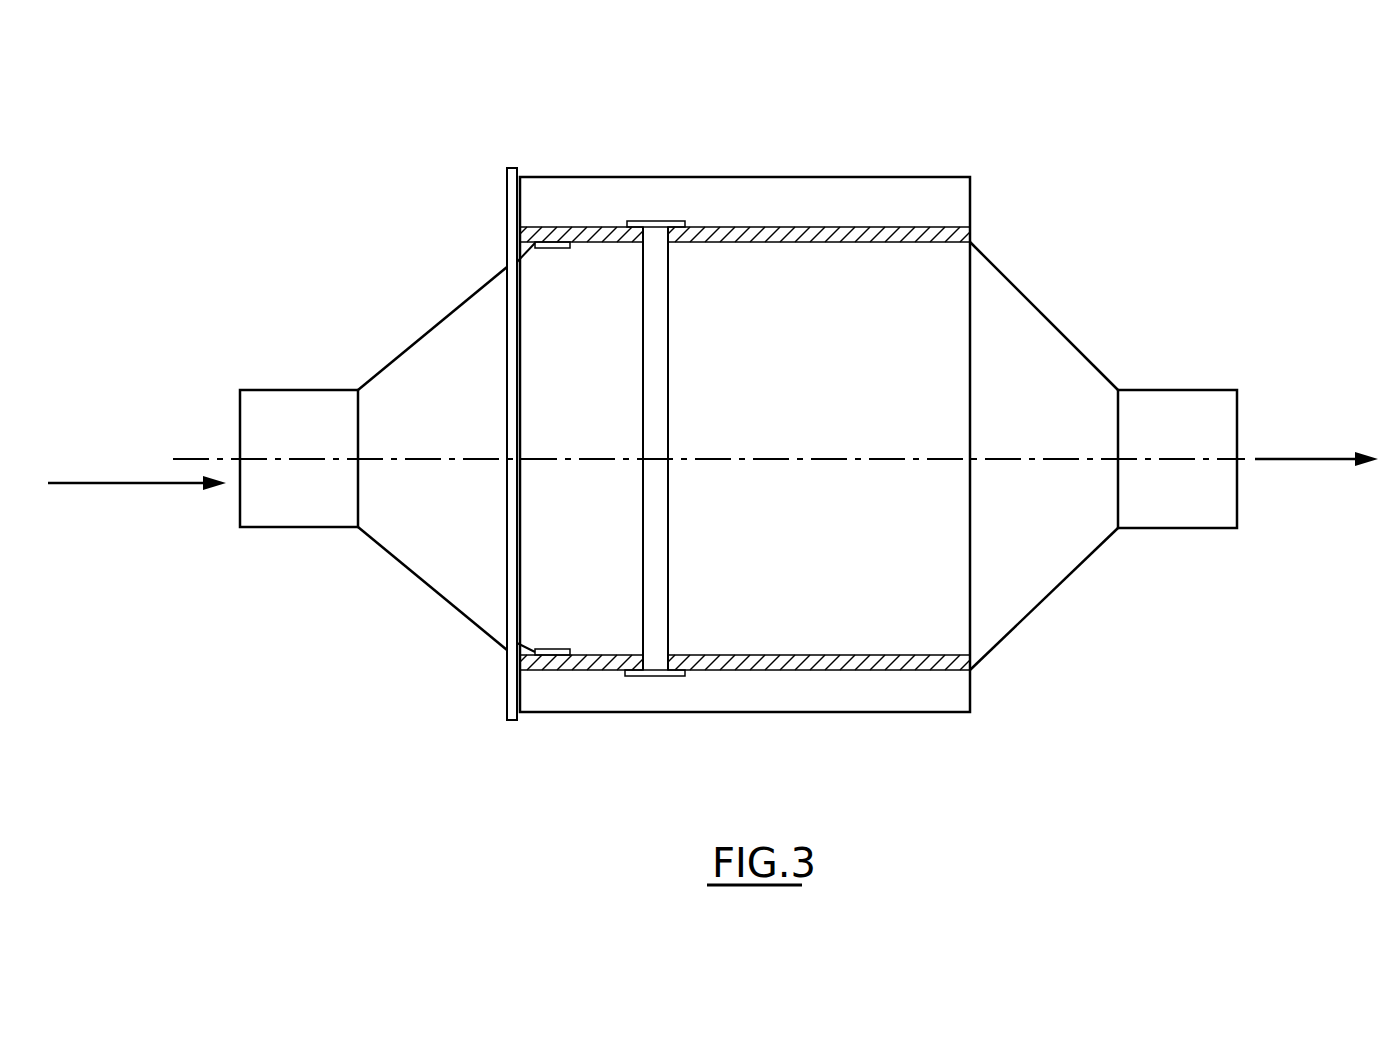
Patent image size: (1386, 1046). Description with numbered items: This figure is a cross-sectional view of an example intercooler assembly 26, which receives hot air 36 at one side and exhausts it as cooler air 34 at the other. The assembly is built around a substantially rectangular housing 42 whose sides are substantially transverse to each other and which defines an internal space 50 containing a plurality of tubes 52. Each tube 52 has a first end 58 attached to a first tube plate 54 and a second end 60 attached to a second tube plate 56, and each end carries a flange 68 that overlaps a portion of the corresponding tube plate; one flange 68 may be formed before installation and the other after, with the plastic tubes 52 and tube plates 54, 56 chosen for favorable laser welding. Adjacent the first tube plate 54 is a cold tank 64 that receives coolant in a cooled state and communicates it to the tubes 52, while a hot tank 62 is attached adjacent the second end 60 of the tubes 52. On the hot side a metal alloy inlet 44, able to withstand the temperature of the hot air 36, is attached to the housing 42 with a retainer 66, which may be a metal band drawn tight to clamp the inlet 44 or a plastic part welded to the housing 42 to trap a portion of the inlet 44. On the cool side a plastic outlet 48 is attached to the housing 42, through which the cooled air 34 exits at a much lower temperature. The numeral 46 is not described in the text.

The intercooler assembly 26 is at (948, 82).
The cooler air 34 is at (1300, 461).
The hot air 36 is at (128, 485).
The housing 42 is at (985, 200).
The inlet 44 is at (405, 543).
The inlet end wall 46 is at (508, 682).
The outlet 48 is at (1017, 570).
The internal space 50 is at (922, 347).
The tubes 52 is at (662, 318).
The first tube plate 54 is at (840, 670).
The second tube plate 56 is at (845, 228).
The first end 58 is at (685, 695).
The second end 60 is at (633, 190).
The hot tank 62 is at (712, 200).
The cold tank 64 is at (597, 701).
The retainer 66 is at (507, 217).
The flange 68 is at (630, 221).